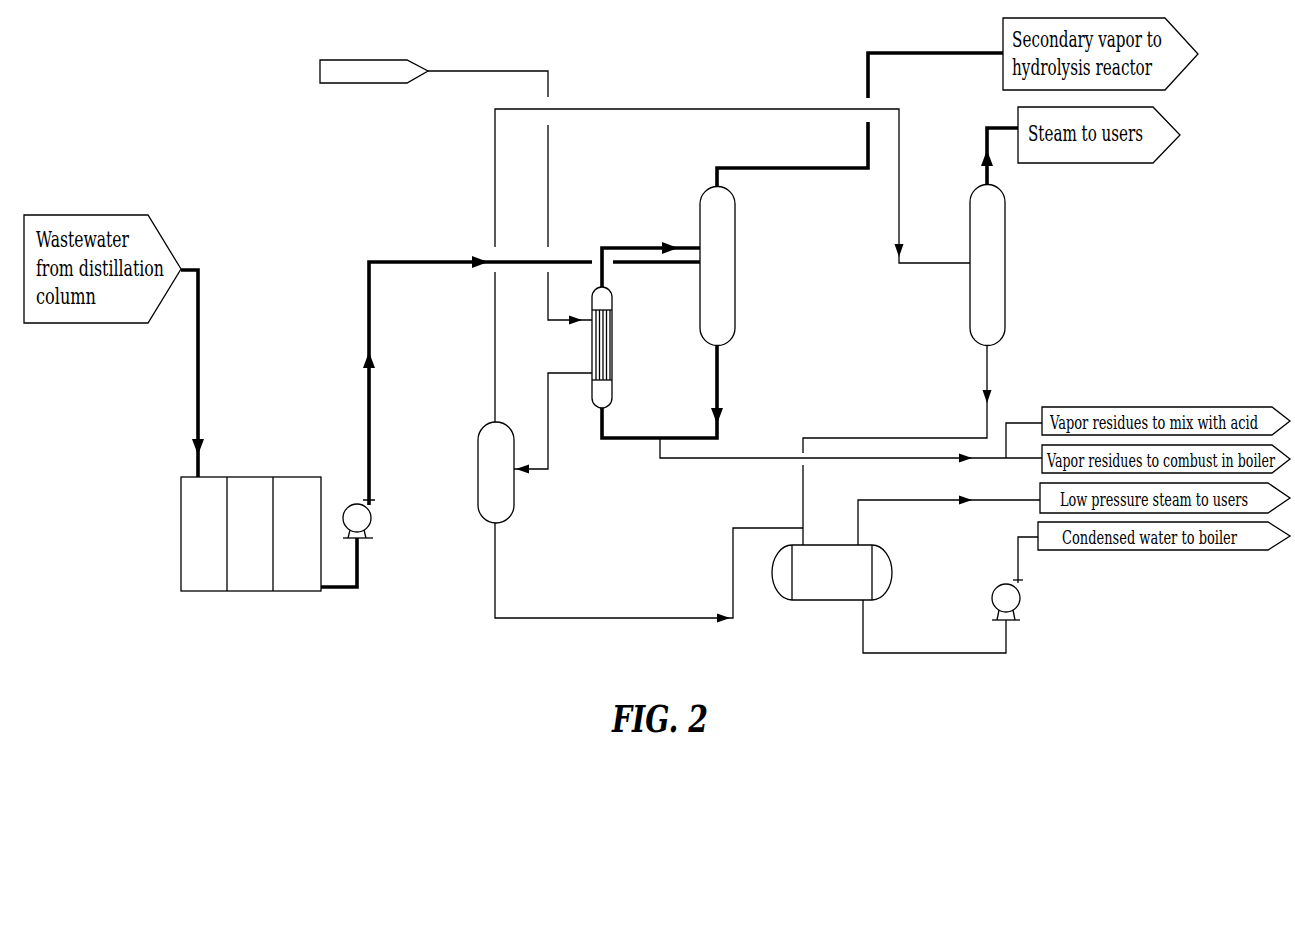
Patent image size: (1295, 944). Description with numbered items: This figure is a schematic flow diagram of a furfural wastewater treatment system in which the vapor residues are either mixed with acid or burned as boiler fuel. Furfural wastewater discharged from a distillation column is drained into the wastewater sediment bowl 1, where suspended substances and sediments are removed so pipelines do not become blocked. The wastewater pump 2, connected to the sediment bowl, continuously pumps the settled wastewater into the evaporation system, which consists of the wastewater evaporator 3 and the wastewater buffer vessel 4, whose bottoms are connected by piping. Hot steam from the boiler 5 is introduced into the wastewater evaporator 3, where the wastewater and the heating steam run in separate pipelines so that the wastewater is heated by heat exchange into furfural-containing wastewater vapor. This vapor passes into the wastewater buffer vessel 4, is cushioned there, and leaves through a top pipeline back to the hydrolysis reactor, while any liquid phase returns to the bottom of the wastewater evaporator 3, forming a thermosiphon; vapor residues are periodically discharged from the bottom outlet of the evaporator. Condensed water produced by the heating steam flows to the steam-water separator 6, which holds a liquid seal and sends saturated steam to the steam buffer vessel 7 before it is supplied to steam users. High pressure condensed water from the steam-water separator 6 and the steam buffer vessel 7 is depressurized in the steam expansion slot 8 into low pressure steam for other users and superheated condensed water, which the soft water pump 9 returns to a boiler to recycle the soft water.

The wastewater sediment bowl 1 is at (254, 503).
The wastewater pump 2 is at (385, 503).
The wastewater evaporator 3 is at (626, 347).
The wastewater buffer vessel 4 is at (754, 266).
The boiler 5 is at (374, 55).
The steam-water separator 6 is at (457, 459).
The steam buffer vessel 7 is at (1029, 265).
The steam expansion slot 8 is at (849, 556).
The soft water pump 9 is at (1030, 592).